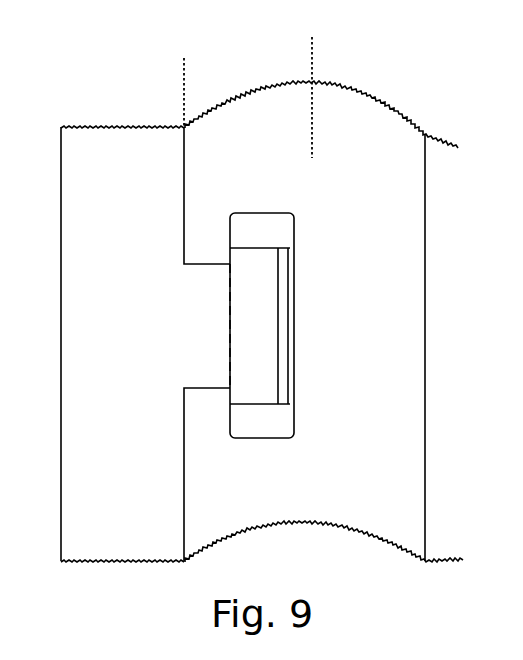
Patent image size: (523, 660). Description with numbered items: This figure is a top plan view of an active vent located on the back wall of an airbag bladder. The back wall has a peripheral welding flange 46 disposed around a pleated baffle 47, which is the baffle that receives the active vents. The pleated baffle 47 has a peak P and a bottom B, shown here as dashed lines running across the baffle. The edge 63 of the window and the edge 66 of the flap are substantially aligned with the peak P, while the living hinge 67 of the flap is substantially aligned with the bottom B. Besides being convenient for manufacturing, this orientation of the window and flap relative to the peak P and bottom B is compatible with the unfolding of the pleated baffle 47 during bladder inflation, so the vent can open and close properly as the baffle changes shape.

The peripheral welding flange 46 is at (80, 243).
The pleated baffle 47 is at (265, 123).
The bottom B is at (184, 83).
The peak P is at (314, 63).
The edge of window 63 is at (292, 230).
The edge of flap 66 is at (283, 305).
The living hinge 67 is at (229, 338).